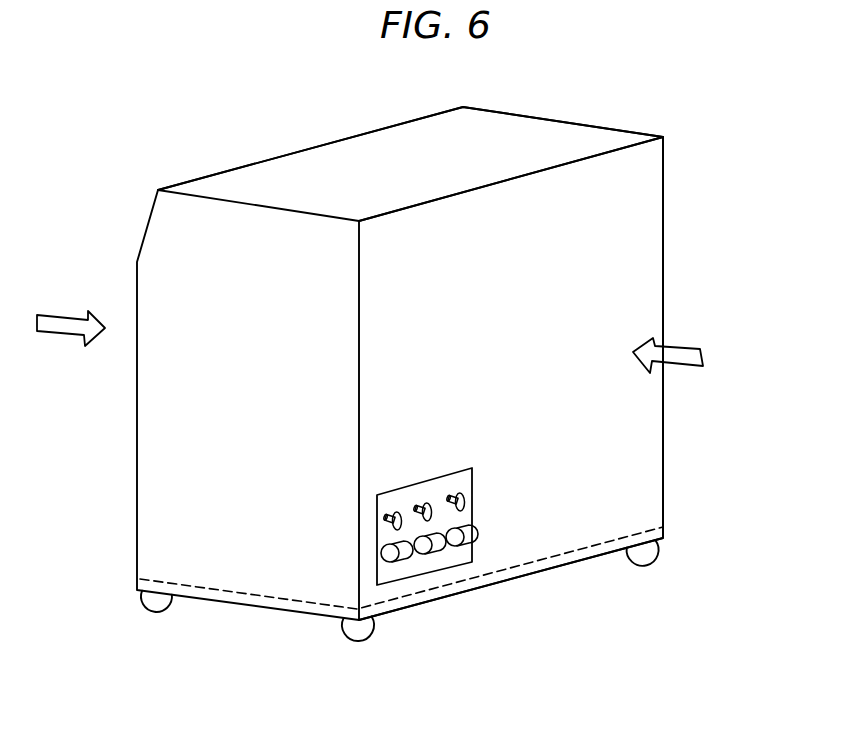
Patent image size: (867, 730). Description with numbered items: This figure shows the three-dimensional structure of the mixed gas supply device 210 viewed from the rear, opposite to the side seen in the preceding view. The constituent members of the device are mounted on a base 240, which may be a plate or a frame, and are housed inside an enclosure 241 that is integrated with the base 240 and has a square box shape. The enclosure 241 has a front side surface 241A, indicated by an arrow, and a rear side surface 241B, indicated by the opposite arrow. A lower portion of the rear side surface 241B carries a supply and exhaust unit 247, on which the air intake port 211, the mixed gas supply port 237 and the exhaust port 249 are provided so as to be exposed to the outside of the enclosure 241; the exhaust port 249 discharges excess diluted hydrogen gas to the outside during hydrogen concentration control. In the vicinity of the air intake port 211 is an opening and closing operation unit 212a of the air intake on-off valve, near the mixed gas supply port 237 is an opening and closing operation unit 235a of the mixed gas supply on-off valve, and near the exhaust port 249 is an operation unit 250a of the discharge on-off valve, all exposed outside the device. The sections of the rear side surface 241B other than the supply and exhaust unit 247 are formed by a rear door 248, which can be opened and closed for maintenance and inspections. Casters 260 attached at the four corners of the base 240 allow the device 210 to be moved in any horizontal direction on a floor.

The mixed gas supply device 210 is at (667, 102).
The enclosure 241 is at (542, 118).
The front side surface 241A is at (65, 316).
The rear side surface 241B is at (690, 348).
The rear door 248 is at (637, 455).
The supply and exhaust unit 247 is at (462, 478).
The opening and closing operation unit 212a is at (397, 514).
The operation unit 250a is at (427, 506).
The opening and closing operation unit 235a is at (466, 505).
The air intake port 211 is at (398, 556).
The exhaust port 249 is at (432, 550).
The mixed gas supply port 237 is at (466, 538).
The base 240 is at (257, 595).
The casters 260 is at (157, 603).